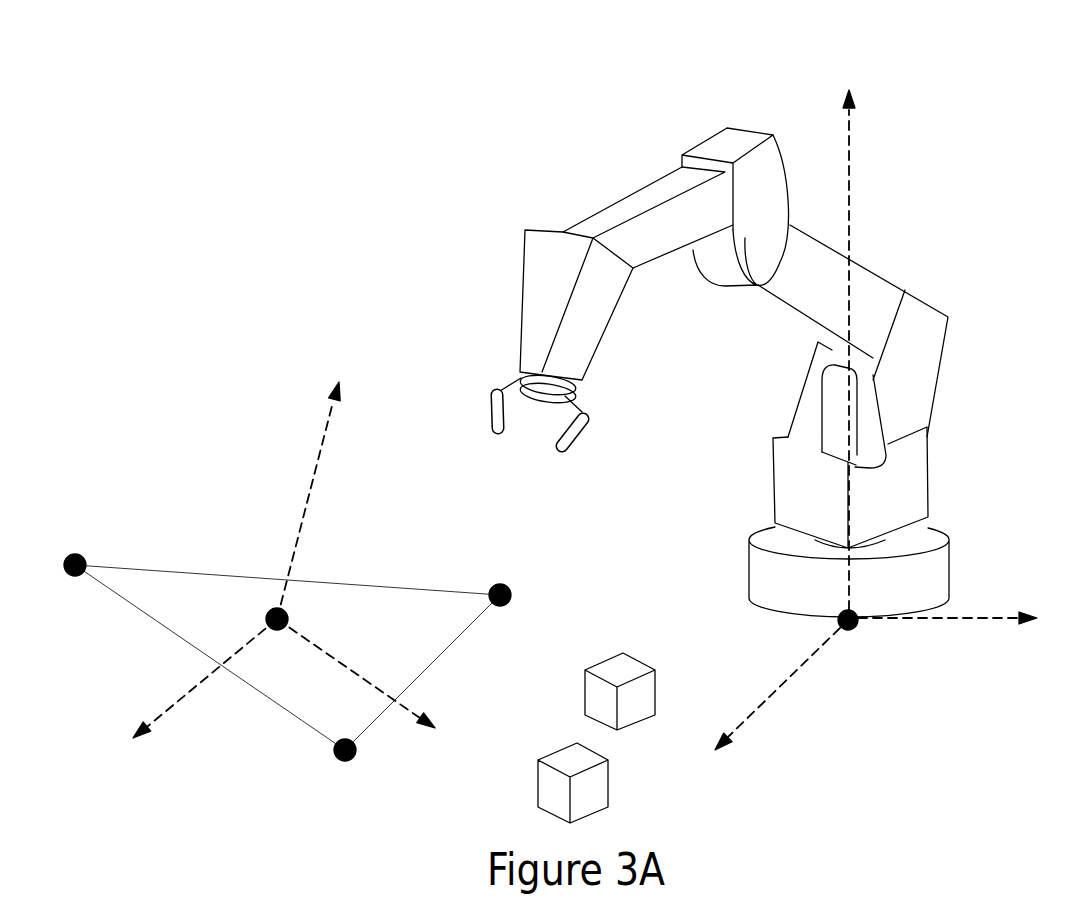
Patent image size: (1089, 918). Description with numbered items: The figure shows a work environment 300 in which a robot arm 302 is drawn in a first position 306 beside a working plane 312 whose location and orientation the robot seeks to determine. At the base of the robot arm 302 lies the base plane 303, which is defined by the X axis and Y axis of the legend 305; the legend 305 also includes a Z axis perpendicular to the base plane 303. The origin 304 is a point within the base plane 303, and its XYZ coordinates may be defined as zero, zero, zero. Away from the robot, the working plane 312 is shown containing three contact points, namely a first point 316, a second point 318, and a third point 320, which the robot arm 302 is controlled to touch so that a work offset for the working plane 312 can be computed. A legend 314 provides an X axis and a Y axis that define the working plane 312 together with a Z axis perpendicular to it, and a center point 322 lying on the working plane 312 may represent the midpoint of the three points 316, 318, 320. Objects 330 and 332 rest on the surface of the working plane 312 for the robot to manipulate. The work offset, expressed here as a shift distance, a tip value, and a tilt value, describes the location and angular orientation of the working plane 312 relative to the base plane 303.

The work environment 300 is at (614, 418).
The robot arm 302 is at (950, 305).
The base plane 303 is at (833, 633).
The origin 304 is at (858, 625).
The legend 305 is at (753, 715).
The first position 306 is at (930, 437).
The working plane 312 is at (160, 602).
The legend 314 is at (190, 700).
The first point 316 is at (507, 588).
The second point 318 is at (340, 758).
The third point 320 is at (78, 547).
The center point 322 is at (339, 625).
The object 330 is at (612, 668).
The object 332 is at (563, 757).